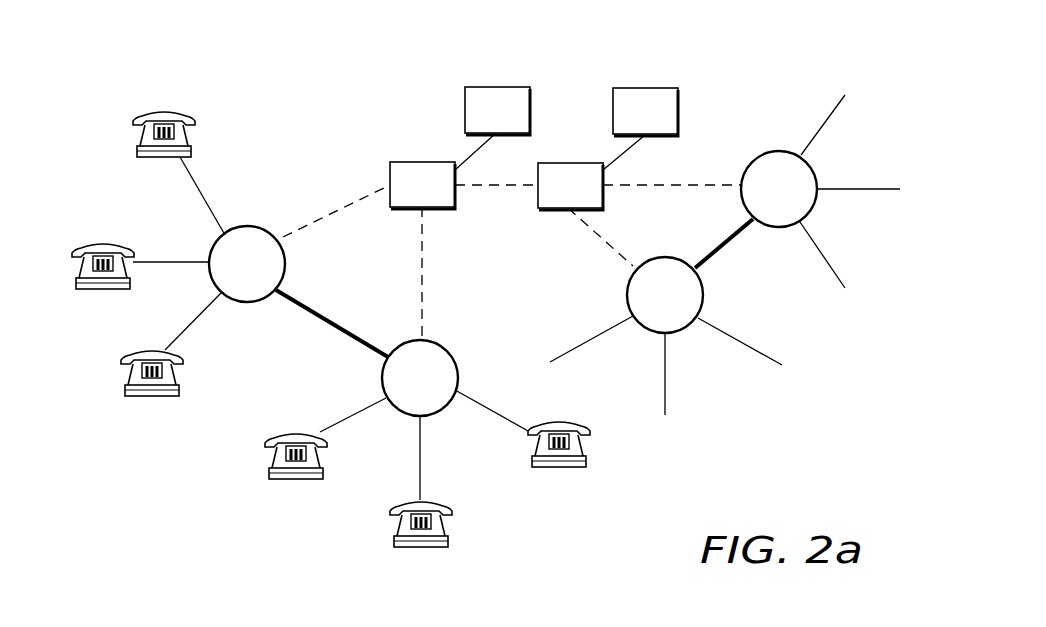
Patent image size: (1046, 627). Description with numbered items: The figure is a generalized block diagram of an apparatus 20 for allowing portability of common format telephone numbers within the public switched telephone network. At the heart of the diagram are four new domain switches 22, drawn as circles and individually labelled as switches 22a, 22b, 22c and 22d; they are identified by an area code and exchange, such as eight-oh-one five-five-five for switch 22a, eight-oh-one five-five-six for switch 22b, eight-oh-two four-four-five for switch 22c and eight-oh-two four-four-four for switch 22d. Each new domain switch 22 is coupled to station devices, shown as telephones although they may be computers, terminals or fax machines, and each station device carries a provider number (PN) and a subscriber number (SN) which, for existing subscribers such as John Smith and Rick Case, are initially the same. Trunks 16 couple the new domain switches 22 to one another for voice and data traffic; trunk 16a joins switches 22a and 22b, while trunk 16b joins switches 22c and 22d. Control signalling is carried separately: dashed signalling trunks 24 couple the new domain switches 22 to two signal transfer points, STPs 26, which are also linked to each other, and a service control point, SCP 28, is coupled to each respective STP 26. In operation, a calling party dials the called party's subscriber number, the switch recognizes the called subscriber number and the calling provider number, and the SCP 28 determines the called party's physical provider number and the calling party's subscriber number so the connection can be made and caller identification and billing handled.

The trunk 16 is at (329, 329).
The trunk 16a is at (332, 324).
The trunk 16b is at (724, 246).
The apparatus for allowing portability of common format telephone numbers 20 is at (742, 56).
The new domain switch 22 is at (256, 237).
The new domain switch 22a is at (257, 227).
The new domain switch 22b is at (466, 328).
The new domain switch 22c is at (704, 300).
The new domain switch 22d is at (779, 151).
The signalling trunk 24 is at (336, 212).
The signal transfer point 26 is at (422, 162).
The service control point 28 is at (498, 87).